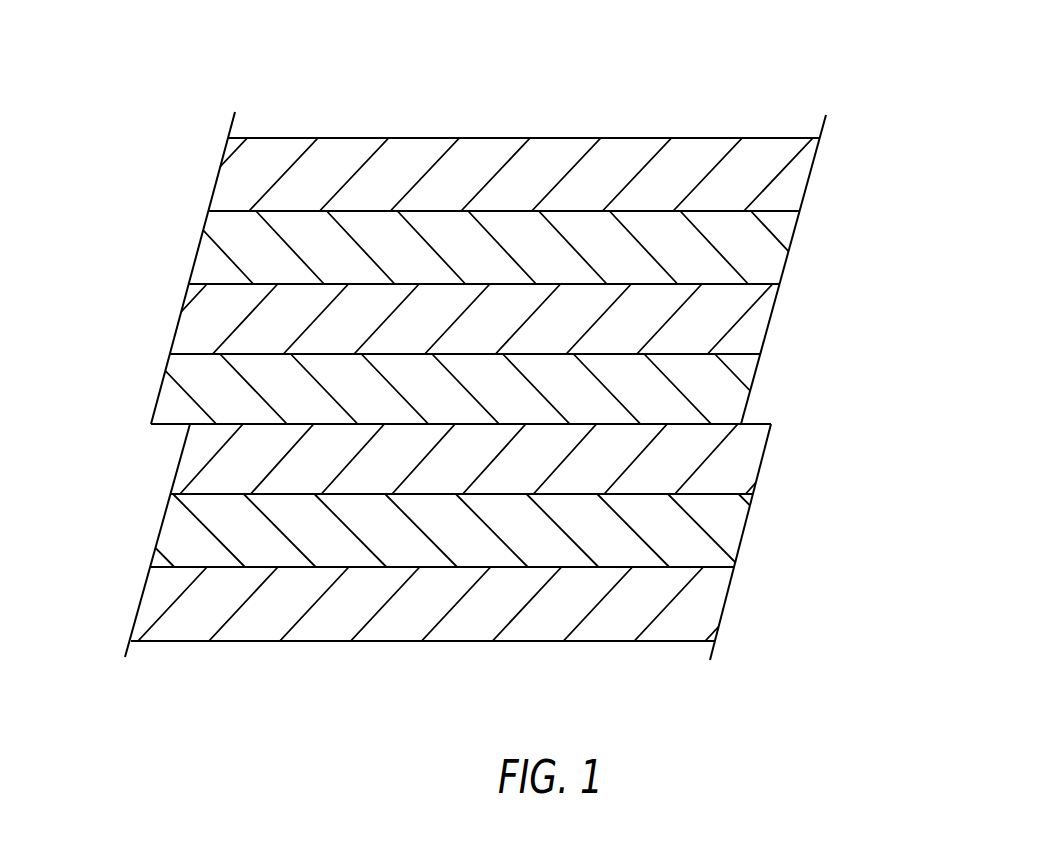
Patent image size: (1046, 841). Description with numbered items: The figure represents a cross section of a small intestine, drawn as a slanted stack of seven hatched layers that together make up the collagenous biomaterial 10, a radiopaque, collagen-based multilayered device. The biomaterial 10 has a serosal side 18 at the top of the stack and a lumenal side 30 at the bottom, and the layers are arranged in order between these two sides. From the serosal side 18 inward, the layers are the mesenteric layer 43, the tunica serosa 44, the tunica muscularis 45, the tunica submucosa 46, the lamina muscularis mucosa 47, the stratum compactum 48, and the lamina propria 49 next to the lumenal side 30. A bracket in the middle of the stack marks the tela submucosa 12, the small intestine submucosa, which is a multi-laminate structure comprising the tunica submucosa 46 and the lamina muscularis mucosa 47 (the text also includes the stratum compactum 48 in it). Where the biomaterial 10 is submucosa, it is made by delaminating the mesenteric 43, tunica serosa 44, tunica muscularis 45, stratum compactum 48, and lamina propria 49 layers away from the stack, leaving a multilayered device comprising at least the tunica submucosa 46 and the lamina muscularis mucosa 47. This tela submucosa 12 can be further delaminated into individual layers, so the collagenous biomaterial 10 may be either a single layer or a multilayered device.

The collagenous biomaterial 10 is at (642, 63).
The tela submucosa 12 is at (770, 355).
The serosal side 18 is at (635, 107).
The lumenal side 30 is at (547, 663).
The mesenteric layer 43 is at (788, 180).
The tunica serosa 44 is at (778, 238).
The tunica muscularis 45 is at (755, 327).
The tunica submucosa 46 is at (202, 378).
The lamina muscularis mucosa 47 is at (203, 443).
The stratum compactum 48 is at (733, 518).
The lamina propria 49 is at (718, 600).